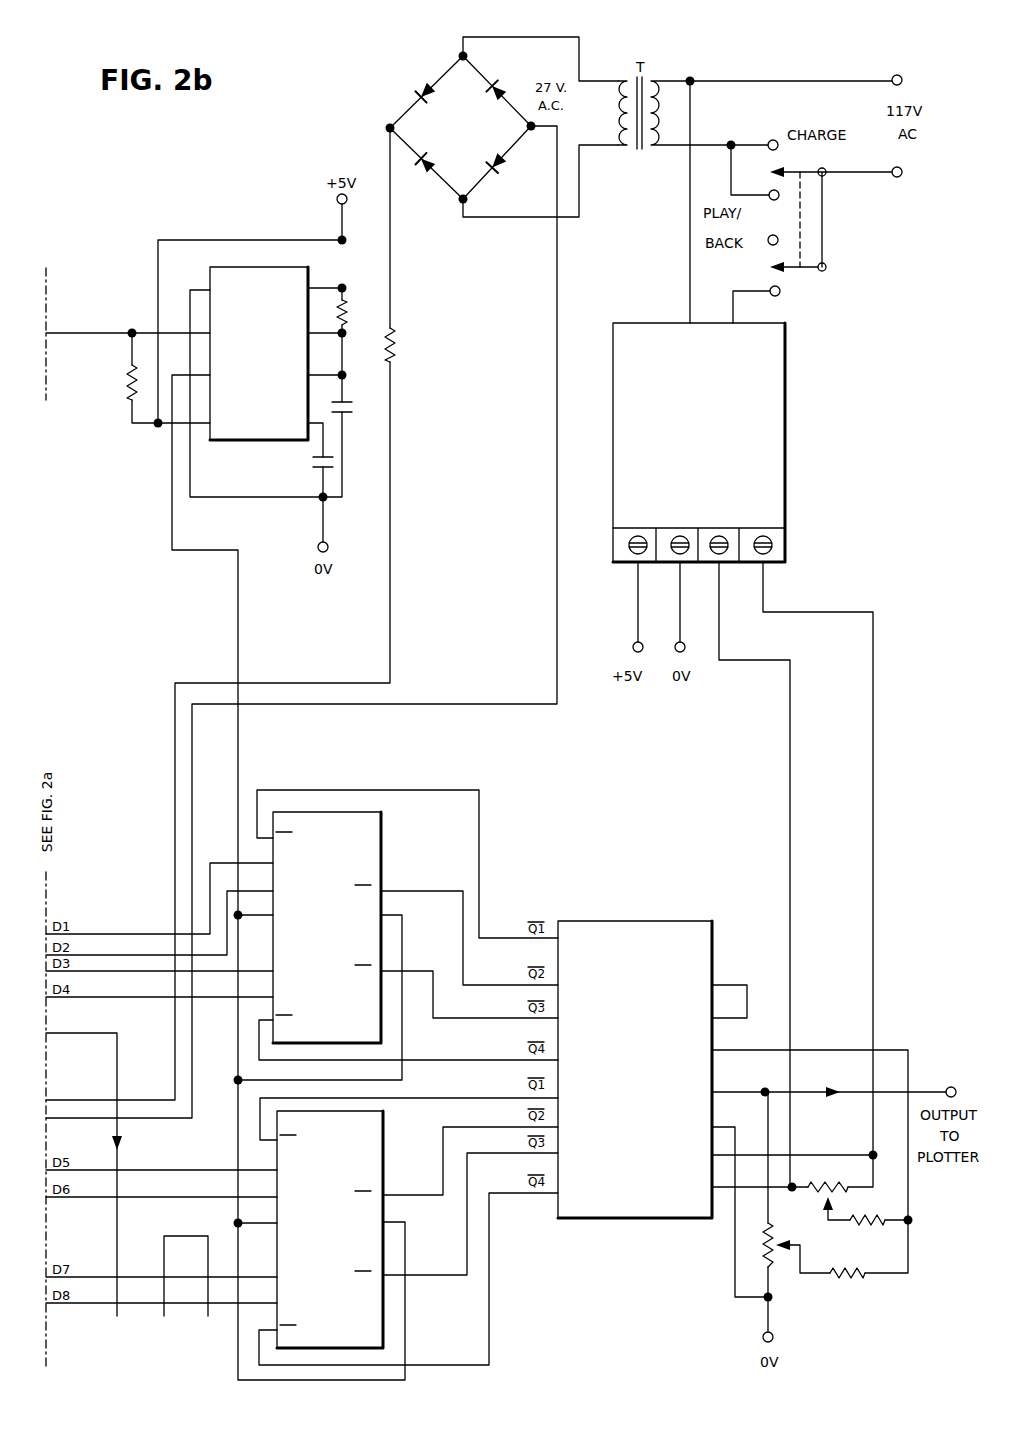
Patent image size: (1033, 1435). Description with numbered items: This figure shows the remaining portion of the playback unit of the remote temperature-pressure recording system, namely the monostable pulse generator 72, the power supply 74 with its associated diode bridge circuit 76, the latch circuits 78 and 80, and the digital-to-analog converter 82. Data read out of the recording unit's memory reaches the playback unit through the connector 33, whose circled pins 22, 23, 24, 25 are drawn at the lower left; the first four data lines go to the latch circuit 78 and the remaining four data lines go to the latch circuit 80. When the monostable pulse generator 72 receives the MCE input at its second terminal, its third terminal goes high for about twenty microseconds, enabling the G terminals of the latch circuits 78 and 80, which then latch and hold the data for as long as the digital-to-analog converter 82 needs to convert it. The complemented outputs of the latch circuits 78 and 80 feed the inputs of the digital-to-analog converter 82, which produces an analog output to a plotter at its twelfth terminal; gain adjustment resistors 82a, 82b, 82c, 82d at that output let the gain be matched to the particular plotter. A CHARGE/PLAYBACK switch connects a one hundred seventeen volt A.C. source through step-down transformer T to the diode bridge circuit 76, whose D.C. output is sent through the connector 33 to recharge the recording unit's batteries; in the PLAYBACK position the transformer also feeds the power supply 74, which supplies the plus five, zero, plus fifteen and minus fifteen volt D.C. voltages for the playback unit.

The monostable pulse generator 72 is at (230, 440).
The power supply 74 is at (785, 355).
The diode bridge circuit 76 is at (470, 138).
The latch circuit 78 is at (381, 836).
The latch circuit 80 is at (383, 1168).
The digital-to-analog converter (DAC) 82 is at (676, 921).
The gain adjustment resistor 82a is at (760, 1248).
The gain adjustment resistor 82b is at (834, 1180).
The gain adjustment resistor 82c is at (845, 1283).
The gain adjustment resistor 82d is at (872, 1228).
The connector 33 is at (143, 1345).
The connector pin 22 is at (78, 1328).
The connector pin 23 is at (119, 1328).
The connector pin 24 is at (164, 1328).
The connector pin 25 is at (208, 1328).